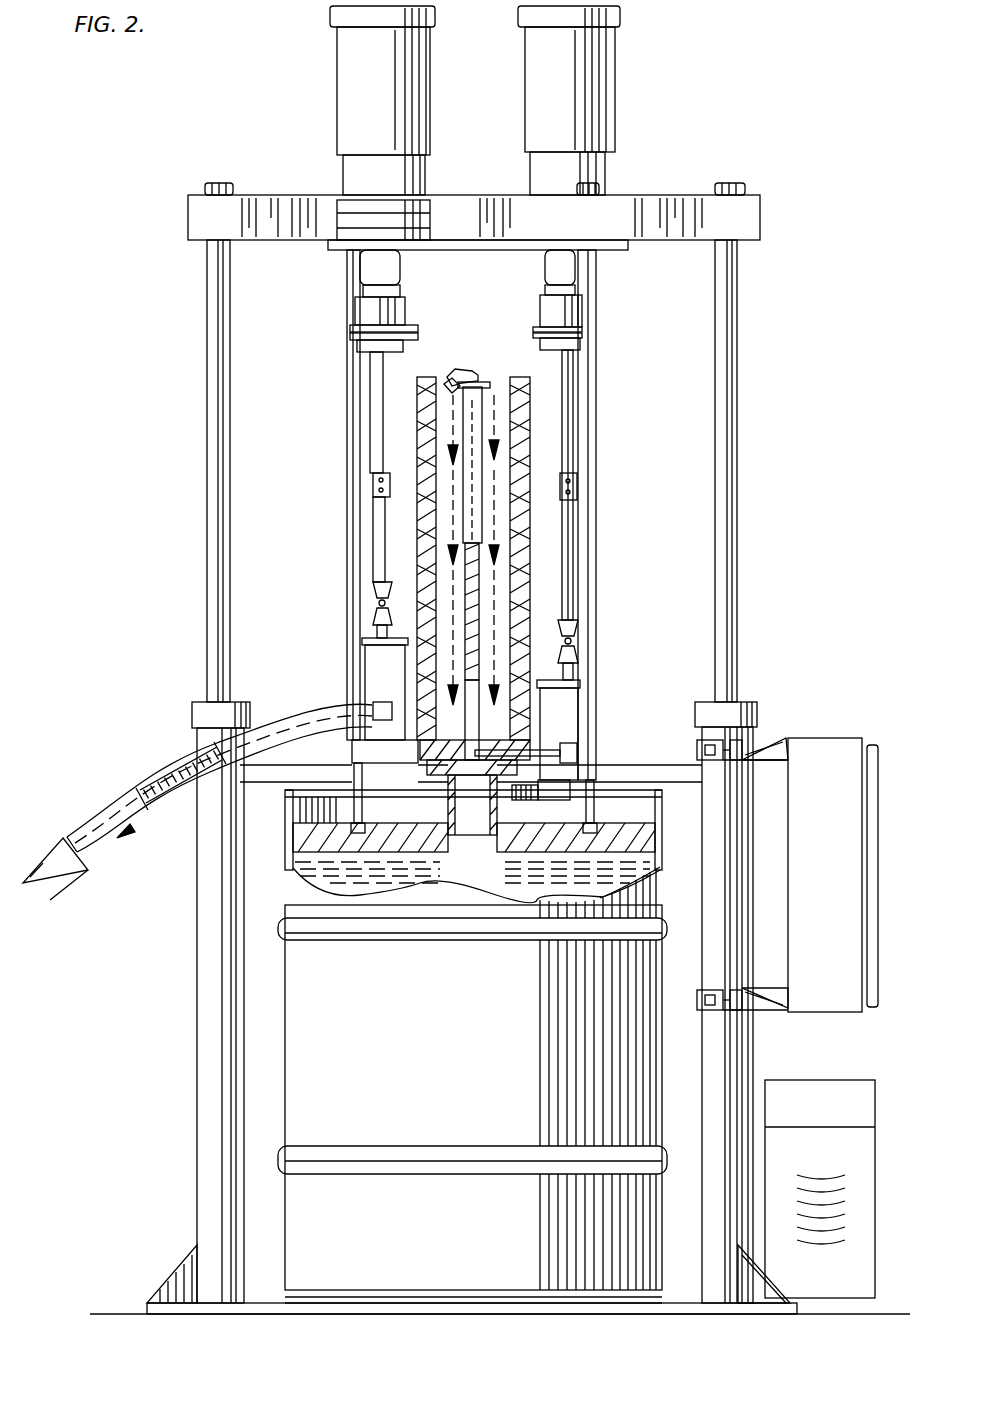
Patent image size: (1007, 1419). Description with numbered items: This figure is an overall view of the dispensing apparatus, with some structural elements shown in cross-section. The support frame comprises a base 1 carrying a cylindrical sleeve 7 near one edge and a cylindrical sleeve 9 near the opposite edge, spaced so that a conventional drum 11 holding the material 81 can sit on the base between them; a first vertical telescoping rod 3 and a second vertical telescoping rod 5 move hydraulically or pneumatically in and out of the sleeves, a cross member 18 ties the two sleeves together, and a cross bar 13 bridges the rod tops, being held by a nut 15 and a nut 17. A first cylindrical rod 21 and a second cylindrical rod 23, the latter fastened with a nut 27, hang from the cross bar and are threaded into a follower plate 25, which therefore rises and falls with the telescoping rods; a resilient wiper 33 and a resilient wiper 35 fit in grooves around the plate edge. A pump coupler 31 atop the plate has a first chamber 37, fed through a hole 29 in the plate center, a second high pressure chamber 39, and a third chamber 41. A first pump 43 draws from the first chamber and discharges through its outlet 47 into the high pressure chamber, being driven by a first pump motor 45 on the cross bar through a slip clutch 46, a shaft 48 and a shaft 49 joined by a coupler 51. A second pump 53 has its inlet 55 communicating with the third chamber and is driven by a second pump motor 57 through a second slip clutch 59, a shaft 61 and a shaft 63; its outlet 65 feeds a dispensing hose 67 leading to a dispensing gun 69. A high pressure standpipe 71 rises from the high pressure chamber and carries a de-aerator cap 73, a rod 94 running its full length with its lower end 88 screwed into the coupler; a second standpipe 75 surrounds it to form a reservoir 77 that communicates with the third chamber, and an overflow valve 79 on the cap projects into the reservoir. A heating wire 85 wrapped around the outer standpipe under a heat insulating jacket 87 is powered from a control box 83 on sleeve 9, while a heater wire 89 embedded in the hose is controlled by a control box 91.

The base 1 is at (633, 1305).
The first vertical telescoping rod 3 is at (205, 508).
The second vertical telescoping rod 5 is at (740, 508).
The cylindrical sleeve 7 is at (197, 862).
The cylindrical sleeve 9 is at (748, 740).
The drum 11 is at (285, 966).
The cross bar 13 is at (665, 195).
The nut 15 is at (730, 183).
The nut 17 is at (220, 183).
The cross member 18 is at (665, 770).
The first cylindrical rod 21 is at (347, 490).
The second cylindrical rod 23 is at (575, 505).
The follower plate 25 is at (293, 860).
The nut 27 is at (590, 183).
The hole 29 is at (477, 866).
The pump coupler 31 is at (554, 789).
The resilient wiper 33 is at (290, 835).
The resilient wiper 35 is at (660, 840).
The first chamber 37 is at (443, 878).
The second high pressure chamber 39 is at (525, 750).
The third chamber 41 is at (418, 755).
The first pump 43 is at (568, 700).
The first pump motor 45 is at (612, 72).
The slip clutch 46 is at (535, 330).
The outlet 47 is at (572, 752).
The shaft 48 is at (597, 402).
The shaft 49 is at (597, 577).
The coupler 51 is at (560, 485).
The second pump 53 is at (372, 662).
The inlet 55 is at (352, 752).
The second pump motor 57 is at (337, 72).
The second slip clutch 59 is at (350, 330).
The shaft 61 is at (370, 385).
The shaft 63 is at (373, 527).
The outlet 65 is at (373, 483).
The dispensing hose 67 is at (197, 802).
The dispensing gun 69 is at (55, 852).
The high pressure standpipe 71 is at (536, 552).
The de-aerator cap 73 is at (483, 385).
The second standpipe 75 is at (525, 425).
The reservoir 77 is at (512, 540).
The overflow valve 79 is at (455, 372).
The material 81 is at (612, 878).
The control box 83 is at (815, 750).
The heating wire 85 is at (420, 530).
The heat insulating jacket 87 is at (410, 558).
The lower end 88 is at (445, 775).
The heater wire 89 is at (150, 778).
The control box 91 is at (825, 1080).
The rod 94 is at (466, 575).